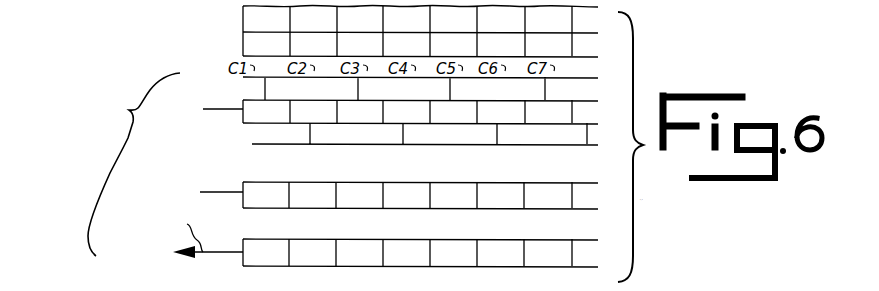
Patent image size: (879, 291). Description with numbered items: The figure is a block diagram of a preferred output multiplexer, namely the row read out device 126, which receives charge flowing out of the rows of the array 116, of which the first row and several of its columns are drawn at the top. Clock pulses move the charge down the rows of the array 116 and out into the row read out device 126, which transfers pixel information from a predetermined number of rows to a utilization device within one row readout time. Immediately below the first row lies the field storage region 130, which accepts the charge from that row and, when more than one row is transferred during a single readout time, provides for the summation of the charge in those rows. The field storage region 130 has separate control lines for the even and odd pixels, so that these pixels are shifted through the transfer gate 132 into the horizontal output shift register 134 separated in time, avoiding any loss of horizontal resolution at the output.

The array 116 is at (243, 22).
The row read out device 126 is at (128, 84).
The field storage region 130 is at (228, 111).
The transfer gate 132 is at (222, 192).
The horizontal output shift register 134 is at (265, 238).